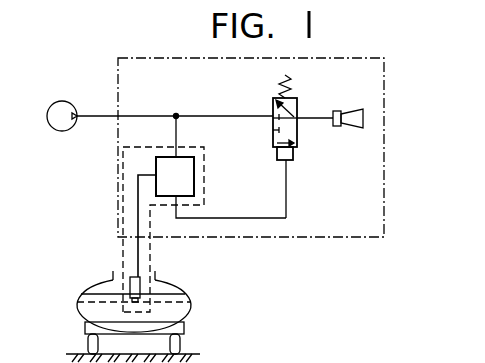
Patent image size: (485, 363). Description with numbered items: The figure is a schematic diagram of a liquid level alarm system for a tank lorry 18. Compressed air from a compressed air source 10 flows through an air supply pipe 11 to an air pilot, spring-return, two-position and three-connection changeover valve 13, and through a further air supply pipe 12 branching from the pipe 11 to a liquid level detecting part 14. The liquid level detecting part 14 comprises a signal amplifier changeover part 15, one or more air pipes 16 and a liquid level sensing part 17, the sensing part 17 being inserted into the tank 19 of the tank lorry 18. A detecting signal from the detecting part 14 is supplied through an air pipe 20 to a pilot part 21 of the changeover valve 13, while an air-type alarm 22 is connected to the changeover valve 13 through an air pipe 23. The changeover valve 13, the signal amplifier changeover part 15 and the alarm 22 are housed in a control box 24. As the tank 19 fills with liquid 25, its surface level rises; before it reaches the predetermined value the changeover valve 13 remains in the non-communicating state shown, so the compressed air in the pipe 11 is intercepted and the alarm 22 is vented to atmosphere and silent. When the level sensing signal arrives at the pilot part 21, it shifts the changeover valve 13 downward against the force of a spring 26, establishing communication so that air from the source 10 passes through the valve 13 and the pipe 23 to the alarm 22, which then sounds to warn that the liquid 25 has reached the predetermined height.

The compressed air source 10 is at (63, 101).
The air supply pipe 11 is at (151, 114).
The air supply pipe 12 is at (178, 132).
The changeover valve 13 is at (297, 108).
The liquid level detecting part 14 is at (150, 146).
The signal amplifier changeover part 15 is at (196, 178).
The air pipe 16 is at (136, 248).
The liquid level sensing part 17 is at (140, 283).
The tank lorry 18 is at (83, 323).
The tank 19 is at (183, 282).
The air pipe 20 is at (243, 216).
The pilot part 21 is at (294, 160).
The air-type alarm 22 is at (351, 111).
The air pipe 23 is at (312, 121).
The control box 24 is at (386, 118).
The liquid 25 is at (188, 307).
The spring 26 is at (279, 83).